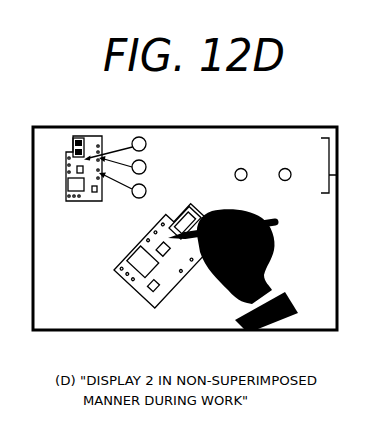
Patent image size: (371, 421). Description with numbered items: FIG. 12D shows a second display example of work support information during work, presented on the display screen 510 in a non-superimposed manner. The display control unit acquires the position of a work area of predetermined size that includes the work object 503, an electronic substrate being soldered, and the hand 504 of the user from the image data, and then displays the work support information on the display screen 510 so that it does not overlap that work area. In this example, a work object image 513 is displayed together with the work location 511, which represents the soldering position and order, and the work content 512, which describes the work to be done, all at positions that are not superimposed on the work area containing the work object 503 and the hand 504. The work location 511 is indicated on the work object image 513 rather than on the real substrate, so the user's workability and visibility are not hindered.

The work object 503 is at (162, 301).
The hand 504 is at (263, 256).
The display screen 510 is at (239, 127).
The work location 511 is at (139, 137).
The work content 512 is at (278, 165).
The work object image 513 is at (78, 137).